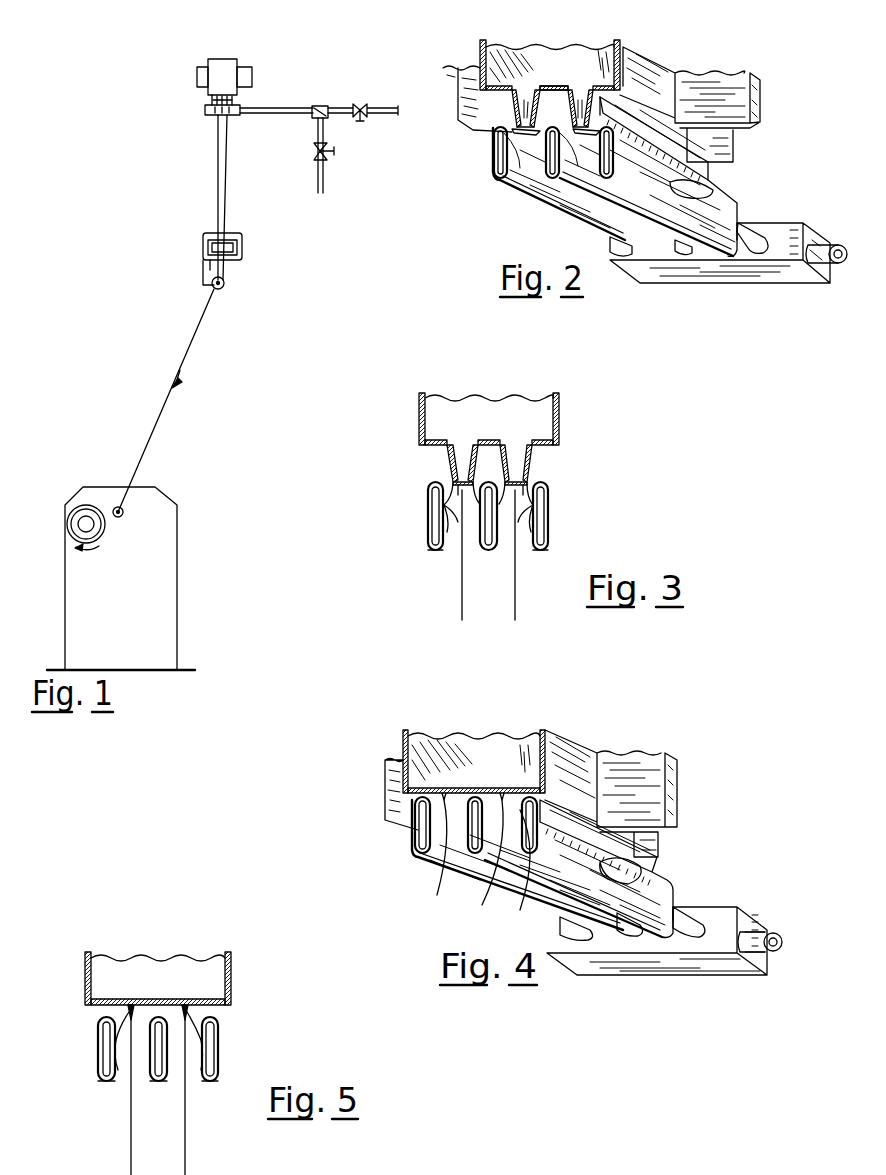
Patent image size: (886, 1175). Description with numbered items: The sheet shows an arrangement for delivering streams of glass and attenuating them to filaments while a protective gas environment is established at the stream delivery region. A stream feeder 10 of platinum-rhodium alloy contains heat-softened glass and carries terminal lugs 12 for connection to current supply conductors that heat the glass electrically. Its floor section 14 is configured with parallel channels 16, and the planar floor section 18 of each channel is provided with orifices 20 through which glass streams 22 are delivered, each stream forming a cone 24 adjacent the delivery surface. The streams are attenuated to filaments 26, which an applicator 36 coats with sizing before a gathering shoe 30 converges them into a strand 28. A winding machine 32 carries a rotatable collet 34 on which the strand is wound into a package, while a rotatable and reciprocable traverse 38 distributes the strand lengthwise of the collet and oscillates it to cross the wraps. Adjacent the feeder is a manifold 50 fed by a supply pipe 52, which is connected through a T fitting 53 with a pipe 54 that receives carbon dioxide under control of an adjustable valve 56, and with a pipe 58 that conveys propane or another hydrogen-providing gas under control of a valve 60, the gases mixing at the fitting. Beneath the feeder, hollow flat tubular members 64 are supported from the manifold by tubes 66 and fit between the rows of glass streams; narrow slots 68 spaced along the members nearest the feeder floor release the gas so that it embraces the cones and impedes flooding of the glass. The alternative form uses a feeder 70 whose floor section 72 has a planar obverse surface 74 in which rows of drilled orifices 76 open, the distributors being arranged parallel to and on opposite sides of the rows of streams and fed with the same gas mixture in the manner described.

In FIG. 1, the stream feeder 10 is at (226, 58).
In FIG. 2, the stream feeder 10 is at (660, 52).
In FIG. 3, the stream feeder 10 is at (562, 406).
In FIG. 1, the terminal lugs 12 is at (200, 67).
In FIG. 2, the terminal lugs 12 is at (448, 70).
In FIG. 2, the floor section 14 is at (555, 105).
In FIG. 3, the floor section 14 is at (488, 452).
In FIG. 1, the channels 16 is at (210, 97).
In FIG. 2, the channels 16 is at (521, 105).
In FIG. 3, the channels 16 is at (461, 455).
In FIG. 2, the floor section of channel 18 is at (494, 158).
In FIG. 3, the floor section of channel 18 is at (428, 512).
In FIG. 2, the orifices 20 is at (510, 140).
In FIG. 3, the orifices 20 is at (455, 478).
In FIG. 1, the glass streams 22 is at (229, 112).
In FIG. 3, the glass streams 22 is at (452, 520).
In FIG. 5, the glass streams 22 is at (115, 1040).
In FIG. 3, the cone 24 is at (440, 520).
In FIG. 5, the cone 24 is at (126, 1012).
In FIG. 1, the filaments 26 is at (218, 200).
In FIG. 3, the filaments 26 is at (462, 602).
In FIG. 5, the filaments 26 is at (158, 1090).
In FIG. 1, the strand 28 is at (196, 322).
In FIG. 1, the gathering shoe 30 is at (225, 284).
In FIG. 1, the winding machine 32 is at (177, 506).
In FIG. 1, the collet 34 is at (68, 524).
In FIG. 1, the applicator 36 is at (203, 238).
In FIG. 1, the traverse 38 is at (124, 513).
In FIG. 1, the manifold 50 is at (205, 110).
In FIG. 2, the manifold 50 is at (735, 283).
In FIG. 4, the manifold 50 is at (705, 968).
In FIG. 1, the supply pipe 52 is at (288, 108).
In FIG. 2, the supply pipe 52 is at (830, 262).
In FIG. 1, the T fitting 53 is at (316, 118).
In FIG. 1, the pipe 54 is at (340, 108).
In FIG. 1, the adjustable valve 56 is at (360, 104).
In FIG. 1, the pipe 58 is at (325, 128).
In FIG. 1, the valve 60 is at (334, 151).
In FIG. 1, the tubular members 64 is at (213, 103).
In FIG. 2, the tubular members 64 is at (510, 178).
In FIG. 3, the tubular members 64 is at (437, 552).
In FIG. 4, the tubular members 64 is at (580, 885).
In FIG. 5, the tubular members 64 is at (150, 1072).
In FIG. 2, the tubes 66 is at (615, 243).
In FIG. 2, the slots 68 is at (710, 200).
In FIG. 3, the slots 68 is at (428, 495).
In FIG. 4, the slots 68 is at (632, 885).
In FIG. 5, the slots 68 is at (100, 1032).
In FIG. 4, the feeder 70 is at (567, 743).
In FIG. 5, the feeder 70 is at (233, 971).
In FIG. 4, the floor section 72 is at (487, 790).
In FIG. 5, the floor section 72 is at (208, 998).
In FIG. 4, the planar obverse surface 74 is at (415, 843).
In FIG. 5, the planar obverse surface 74 is at (190, 1003).
In FIG. 4, the orifices 76 is at (440, 880).